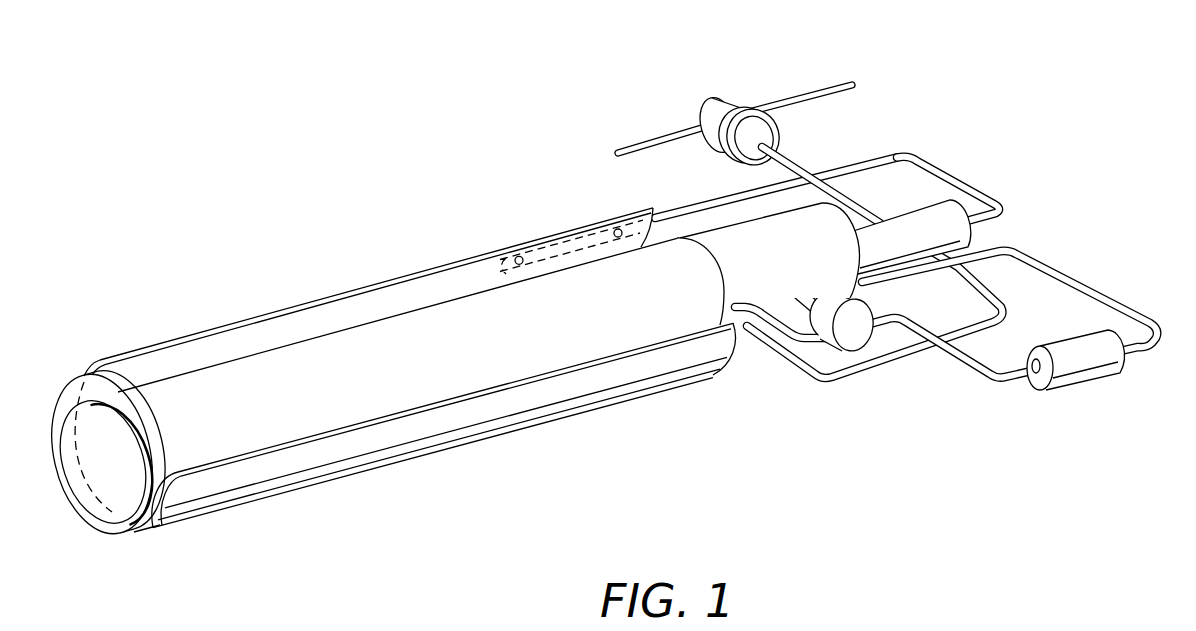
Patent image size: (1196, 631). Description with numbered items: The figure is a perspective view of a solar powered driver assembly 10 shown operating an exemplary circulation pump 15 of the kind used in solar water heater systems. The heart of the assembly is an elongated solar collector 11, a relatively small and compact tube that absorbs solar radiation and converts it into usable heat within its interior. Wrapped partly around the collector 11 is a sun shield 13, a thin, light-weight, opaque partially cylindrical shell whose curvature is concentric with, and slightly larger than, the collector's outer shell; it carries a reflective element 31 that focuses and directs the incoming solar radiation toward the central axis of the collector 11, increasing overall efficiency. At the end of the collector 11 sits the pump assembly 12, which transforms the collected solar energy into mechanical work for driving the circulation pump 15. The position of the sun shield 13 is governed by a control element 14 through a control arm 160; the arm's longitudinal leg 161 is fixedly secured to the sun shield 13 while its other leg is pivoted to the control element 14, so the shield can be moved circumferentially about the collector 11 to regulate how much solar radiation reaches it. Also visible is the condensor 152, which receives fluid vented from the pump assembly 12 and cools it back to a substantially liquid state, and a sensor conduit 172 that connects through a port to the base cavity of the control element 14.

The solar powered driver assembly 10 is at (386, 356).
The solar collector 11 is at (463, 380).
The pump assembly 12 is at (728, 206).
The sun shield 13 is at (226, 294).
The control element 14 is at (999, 230).
The circulation pump 15 is at (739, 70).
The reflective element 31 is at (227, 502).
The condensor 152 is at (1093, 380).
The control arm 160 is at (947, 157).
The longitudinal leg 161 is at (863, 163).
The sensor conduit 172 is at (873, 367).